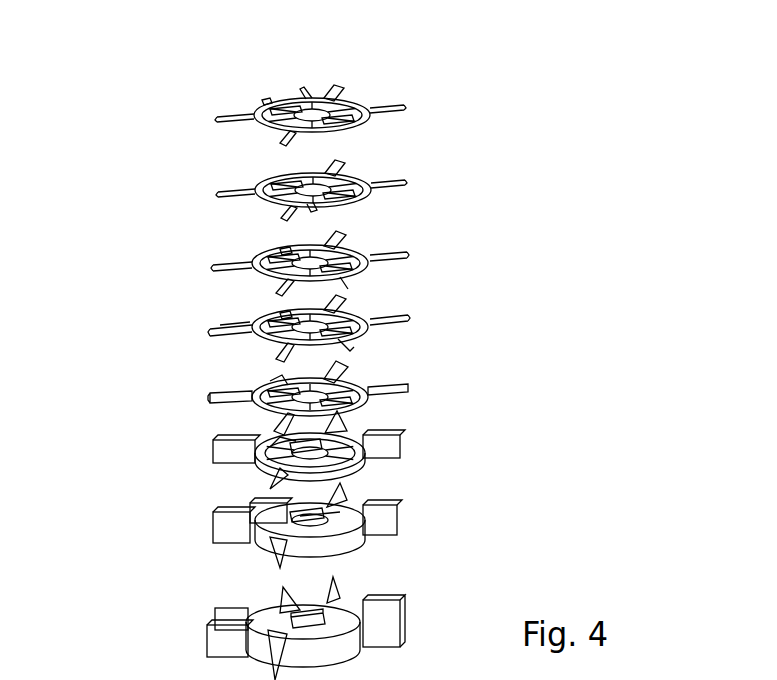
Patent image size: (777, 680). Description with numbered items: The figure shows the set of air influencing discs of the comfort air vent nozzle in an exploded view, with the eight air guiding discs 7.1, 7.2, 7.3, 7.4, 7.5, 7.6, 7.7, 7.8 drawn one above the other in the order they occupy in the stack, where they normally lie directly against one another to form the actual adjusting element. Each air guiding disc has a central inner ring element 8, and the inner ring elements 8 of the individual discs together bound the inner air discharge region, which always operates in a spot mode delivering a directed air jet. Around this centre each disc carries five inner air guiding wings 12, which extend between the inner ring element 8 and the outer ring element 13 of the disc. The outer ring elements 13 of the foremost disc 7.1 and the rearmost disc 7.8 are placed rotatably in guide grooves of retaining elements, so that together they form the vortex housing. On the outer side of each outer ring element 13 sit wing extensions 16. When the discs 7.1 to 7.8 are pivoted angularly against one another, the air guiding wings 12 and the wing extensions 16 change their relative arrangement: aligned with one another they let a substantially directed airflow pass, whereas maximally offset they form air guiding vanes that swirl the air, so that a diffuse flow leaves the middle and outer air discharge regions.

The air guiding disc 7.1 is at (147, 117).
The air guiding disc 7.2 is at (168, 187).
The air guiding disc 7.3 is at (147, 262).
The air guiding disc 7.4 is at (173, 329).
The air guiding disc 7.5 is at (148, 394).
The air guiding disc 7.6 is at (190, 455).
The air guiding disc 7.7 is at (142, 527).
The air guiding disc 7.8 is at (163, 625).
The inner ring element 8 is at (314, 110).
The inner air guiding wing 12 is at (348, 98).
The outer ring element 13 is at (263, 100).
The wing extension 16 is at (400, 108).